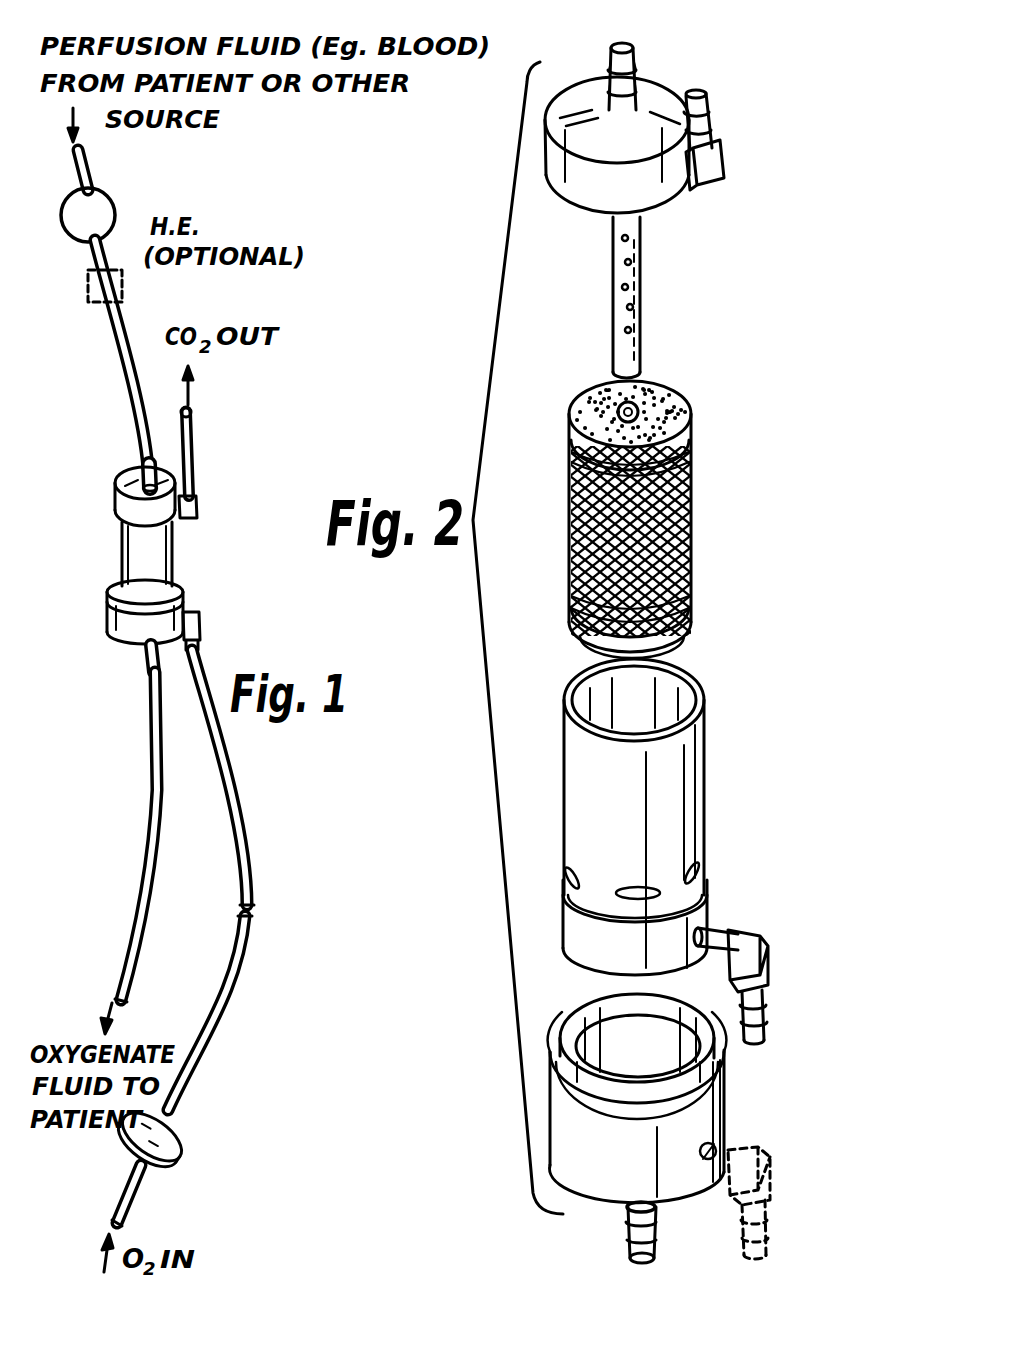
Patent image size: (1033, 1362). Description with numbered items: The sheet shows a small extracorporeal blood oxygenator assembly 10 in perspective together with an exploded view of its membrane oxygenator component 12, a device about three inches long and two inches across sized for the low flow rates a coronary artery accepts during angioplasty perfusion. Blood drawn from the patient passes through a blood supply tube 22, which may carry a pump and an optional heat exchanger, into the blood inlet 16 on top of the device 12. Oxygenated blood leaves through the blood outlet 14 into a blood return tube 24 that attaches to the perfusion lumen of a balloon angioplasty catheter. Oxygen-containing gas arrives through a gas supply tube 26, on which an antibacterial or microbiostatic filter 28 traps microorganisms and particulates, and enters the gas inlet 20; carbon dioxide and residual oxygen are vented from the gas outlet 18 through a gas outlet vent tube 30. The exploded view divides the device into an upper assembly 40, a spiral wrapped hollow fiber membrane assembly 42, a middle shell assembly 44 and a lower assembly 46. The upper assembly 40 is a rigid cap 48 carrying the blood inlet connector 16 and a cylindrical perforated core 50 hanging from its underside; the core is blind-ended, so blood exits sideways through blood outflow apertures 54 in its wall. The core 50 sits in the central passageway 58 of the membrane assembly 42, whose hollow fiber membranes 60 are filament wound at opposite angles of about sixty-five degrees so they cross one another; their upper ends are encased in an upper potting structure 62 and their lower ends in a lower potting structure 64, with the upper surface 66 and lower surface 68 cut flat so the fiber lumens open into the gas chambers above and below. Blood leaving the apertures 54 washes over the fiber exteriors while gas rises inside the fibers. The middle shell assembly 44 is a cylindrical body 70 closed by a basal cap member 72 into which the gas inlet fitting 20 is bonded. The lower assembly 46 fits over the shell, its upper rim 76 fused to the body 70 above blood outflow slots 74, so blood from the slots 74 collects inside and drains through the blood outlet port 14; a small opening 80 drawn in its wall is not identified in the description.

In FIG. 1, the blood oxygenator assembly 10 is at (219, 448).
In FIG. 1, the membrane oxygenator component 12 is at (186, 540).
In FIG. 1, the blood outlet 14 is at (143, 655).
In FIG. 2, the blood outlet 14 is at (628, 1238).
In FIG. 1, the blood inlet connector 16 is at (147, 468).
In FIG. 2, the blood inlet connector 16 is at (636, 62).
In FIG. 1, the gas outlet 18 is at (198, 507).
In FIG. 1, the gas inlet 20 is at (202, 630).
In FIG. 2, the gas inlet 20 is at (772, 975).
In FIG. 1, the blood supply tube 22 is at (86, 165).
In FIG. 1, the blood return tube 24 is at (155, 786).
In FIG. 1, the gas supply tube 26 is at (250, 824).
In FIG. 1, the antibacterial or microbiostatic filter 28 is at (185, 1128).
In FIG. 1, the gas outlet vent tube 30 is at (190, 432).
In FIG. 2, the upper assembly 40 is at (696, 232).
In FIG. 2, the spiral wrapped hollow fiber membrane assembly 42 is at (710, 546).
In FIG. 2, the middle shell assembly 44 is at (718, 800).
In FIG. 2, the lower assembly 46 is at (741, 1116).
In FIG. 2, the cap 48 is at (578, 178).
In FIG. 2, the perforated core 50 is at (641, 293).
In FIG. 2, the blood outflow apertures 54 is at (616, 284).
In FIG. 2, the central passageway 58 is at (645, 405).
In FIG. 2, the hollow fiber membranes 60 is at (655, 430).
In FIG. 2, the upper potting structure 62 is at (572, 446).
In FIG. 2, the lower potting structure 64 is at (585, 632).
In FIG. 2, the upper surface of the upper potting structure 66 is at (600, 402).
In FIG. 2, the lower surface of the lower potting structure 68 is at (698, 634).
In FIG. 2, the cylindrical body 70 is at (672, 754).
In FIG. 2, the basal cap member 72 is at (622, 946).
In FIG. 2, the blood outflow slots 74 is at (668, 898).
In FIG. 2, the upper rim 76 is at (702, 1072).
In FIG. 2, the port opening 80 is at (712, 1172).